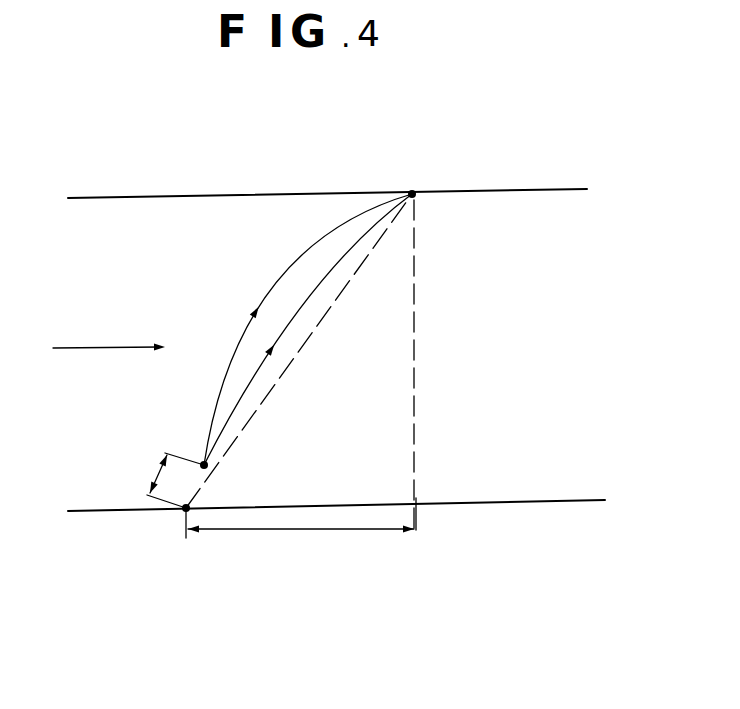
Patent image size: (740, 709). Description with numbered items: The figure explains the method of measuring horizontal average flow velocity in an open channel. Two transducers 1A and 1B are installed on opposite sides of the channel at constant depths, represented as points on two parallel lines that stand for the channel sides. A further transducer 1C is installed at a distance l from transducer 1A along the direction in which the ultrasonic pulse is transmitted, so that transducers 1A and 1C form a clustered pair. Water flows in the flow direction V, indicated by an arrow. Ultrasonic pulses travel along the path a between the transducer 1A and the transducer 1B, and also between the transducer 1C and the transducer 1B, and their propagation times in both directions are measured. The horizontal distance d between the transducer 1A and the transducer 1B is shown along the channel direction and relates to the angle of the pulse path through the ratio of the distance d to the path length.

The transducer 1A is at (182, 539).
The transducer 1B is at (420, 181).
The transducer 1C is at (206, 466).
The flow direction V is at (198, 332).
The straight-line path between positions a is at (299, 351).
The distance d is at (300, 529).
The distance lambda l is at (140, 466).